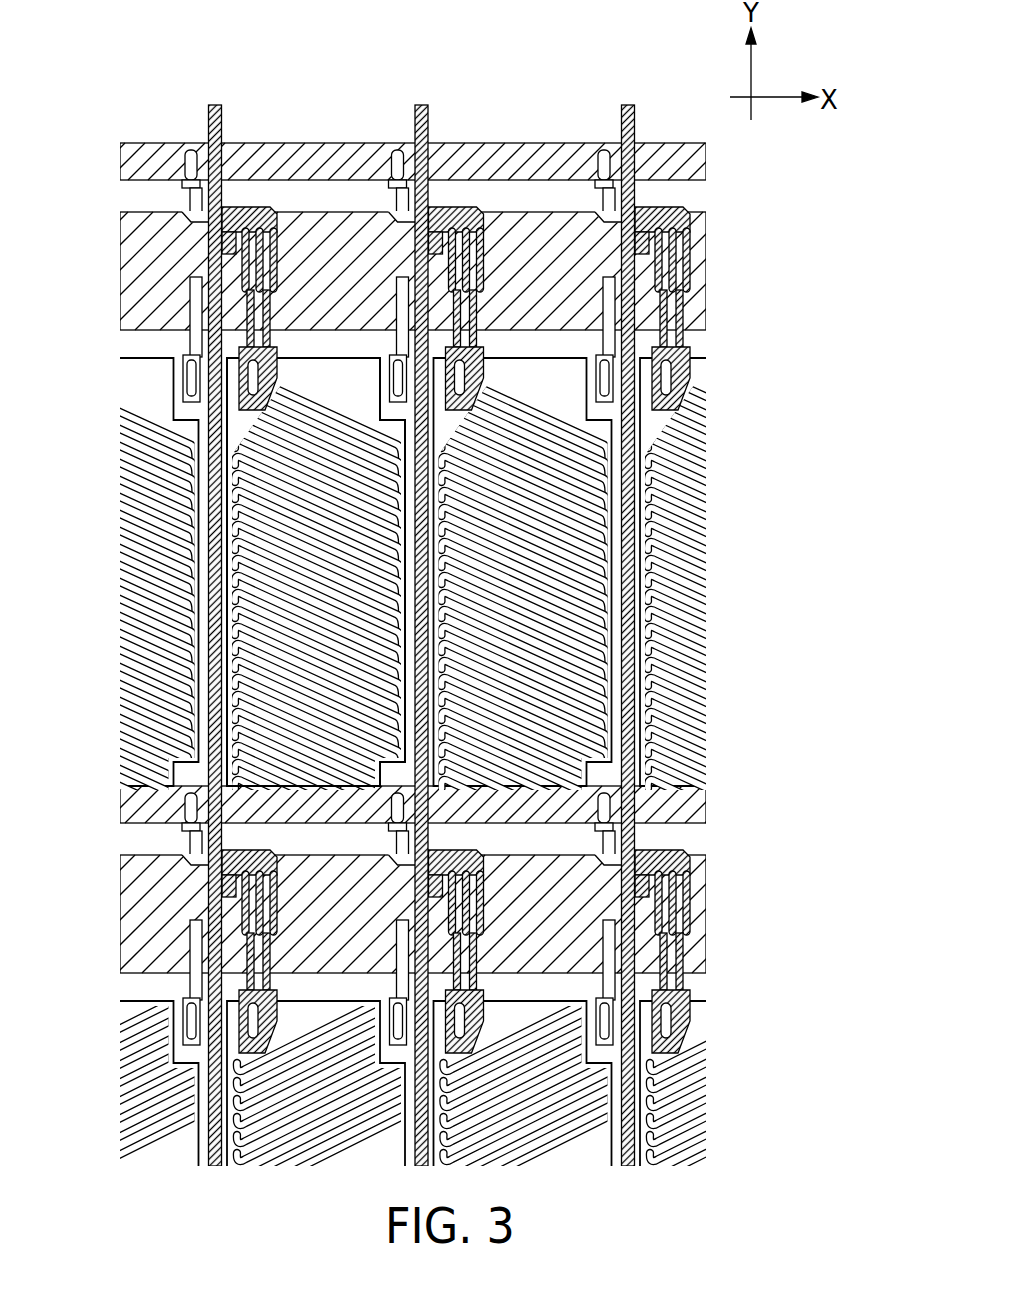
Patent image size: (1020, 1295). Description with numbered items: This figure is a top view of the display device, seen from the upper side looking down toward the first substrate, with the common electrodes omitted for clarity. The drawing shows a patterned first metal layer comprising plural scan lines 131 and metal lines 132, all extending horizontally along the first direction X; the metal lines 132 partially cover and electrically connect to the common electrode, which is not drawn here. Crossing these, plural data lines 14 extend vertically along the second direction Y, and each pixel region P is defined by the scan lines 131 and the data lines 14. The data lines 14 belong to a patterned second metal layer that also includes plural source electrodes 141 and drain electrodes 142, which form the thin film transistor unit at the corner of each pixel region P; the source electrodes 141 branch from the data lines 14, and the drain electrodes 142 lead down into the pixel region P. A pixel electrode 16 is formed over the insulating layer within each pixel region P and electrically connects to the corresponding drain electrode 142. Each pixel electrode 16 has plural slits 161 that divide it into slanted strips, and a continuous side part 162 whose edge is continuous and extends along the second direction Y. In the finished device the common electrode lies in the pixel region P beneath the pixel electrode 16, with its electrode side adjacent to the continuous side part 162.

The data line 14 is at (423, 105).
The scan line 131 is at (707, 265).
The metal line 132 is at (707, 170).
The source electrode 141 is at (214, 214).
The drain electrode 142 is at (243, 349).
The pixel electrode 16 is at (700, 399).
The slit 161 is at (700, 463).
The continuous side part 162 is at (650, 498).
The pixel region P is at (280, 622).